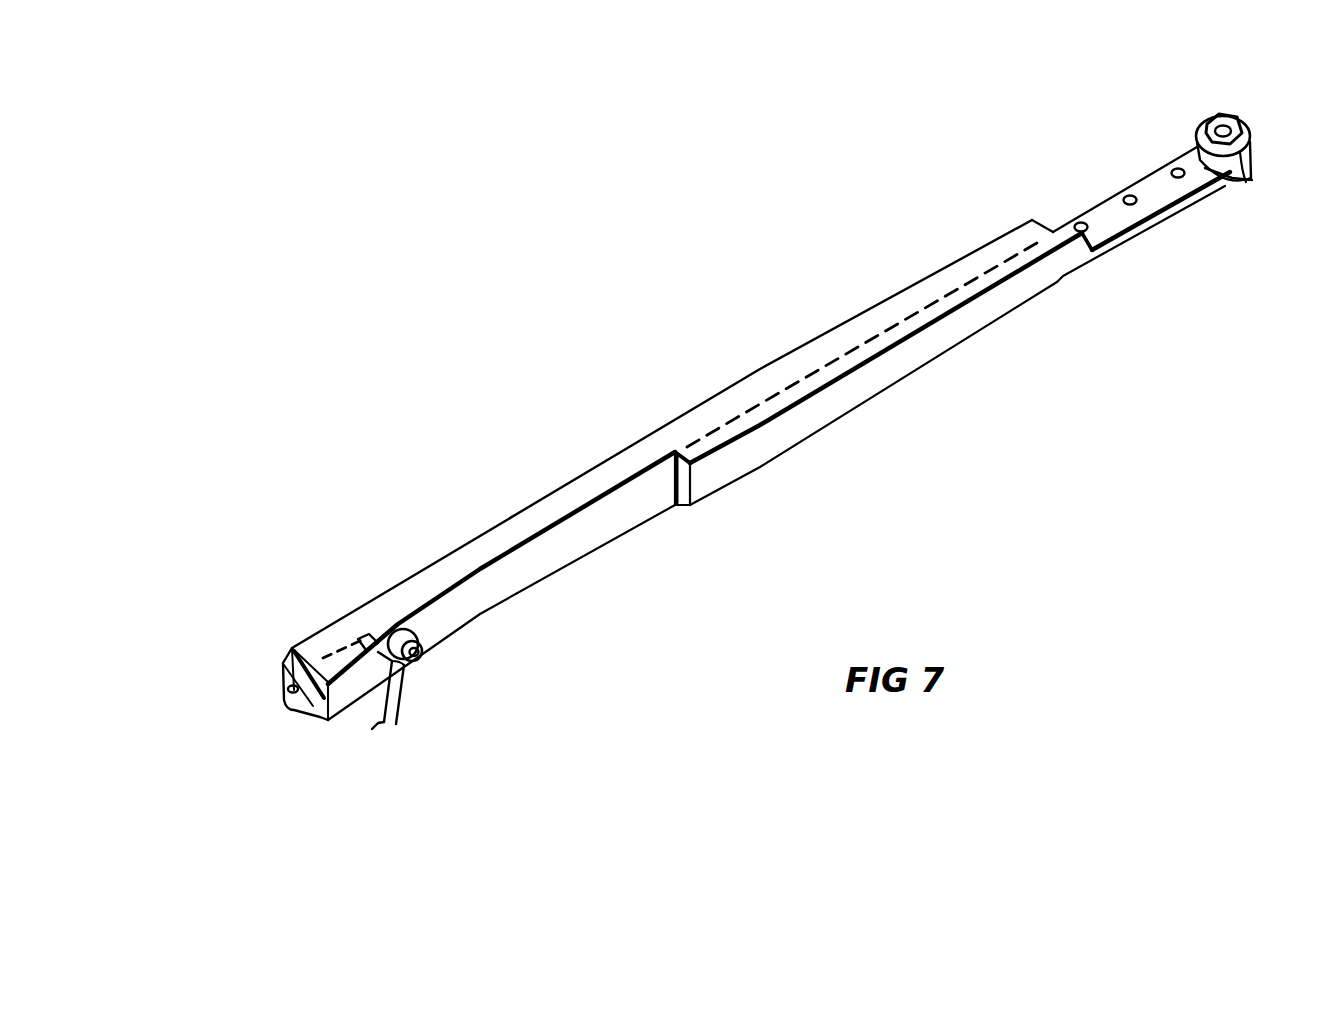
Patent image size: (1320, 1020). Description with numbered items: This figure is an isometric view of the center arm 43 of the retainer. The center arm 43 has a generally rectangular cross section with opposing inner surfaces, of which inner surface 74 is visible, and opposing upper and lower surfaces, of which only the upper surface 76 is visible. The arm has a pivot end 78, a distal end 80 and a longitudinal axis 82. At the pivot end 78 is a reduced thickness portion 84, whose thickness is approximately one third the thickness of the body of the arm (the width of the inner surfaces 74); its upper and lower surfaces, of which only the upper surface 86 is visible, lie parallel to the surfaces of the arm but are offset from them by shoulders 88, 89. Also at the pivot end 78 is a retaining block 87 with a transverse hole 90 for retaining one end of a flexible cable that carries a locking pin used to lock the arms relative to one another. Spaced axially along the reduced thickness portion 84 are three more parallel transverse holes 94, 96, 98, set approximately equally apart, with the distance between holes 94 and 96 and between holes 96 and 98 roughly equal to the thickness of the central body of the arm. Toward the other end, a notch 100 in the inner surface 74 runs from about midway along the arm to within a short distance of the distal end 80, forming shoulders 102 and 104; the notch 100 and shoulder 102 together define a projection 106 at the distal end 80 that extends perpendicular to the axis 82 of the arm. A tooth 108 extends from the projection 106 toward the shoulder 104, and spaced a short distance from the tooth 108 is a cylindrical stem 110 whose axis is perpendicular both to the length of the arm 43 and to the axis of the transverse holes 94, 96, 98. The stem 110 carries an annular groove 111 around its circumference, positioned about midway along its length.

The center arm 43 is at (749, 419).
The inner surface 74 is at (744, 471).
The upper surface 76 is at (702, 427).
The pivot end 78 is at (1199, 120).
The distal end 80 is at (296, 648).
The axis 82 is at (248, 654).
The reduced thickness portion 84 is at (1173, 211).
The upper surface of reduced thickness portion 86 is at (1147, 181).
The retaining block 87 is at (1248, 180).
The shoulder 88 is at (1048, 210).
The shoulder 89 is at (1141, 259).
The transverse hole 90 is at (1231, 118).
The transverse hole 94 is at (1174, 166).
The transverse hole 96 is at (1127, 195).
The transverse hole 98 is at (1079, 221).
The notch 100 is at (613, 527).
The shoulder 102 is at (353, 557).
The shoulder 104 is at (699, 523).
The projection 106 is at (382, 713).
The tooth 108 is at (391, 680).
The cylindrical stem 110 is at (424, 657).
The annular groove 111 is at (400, 681).